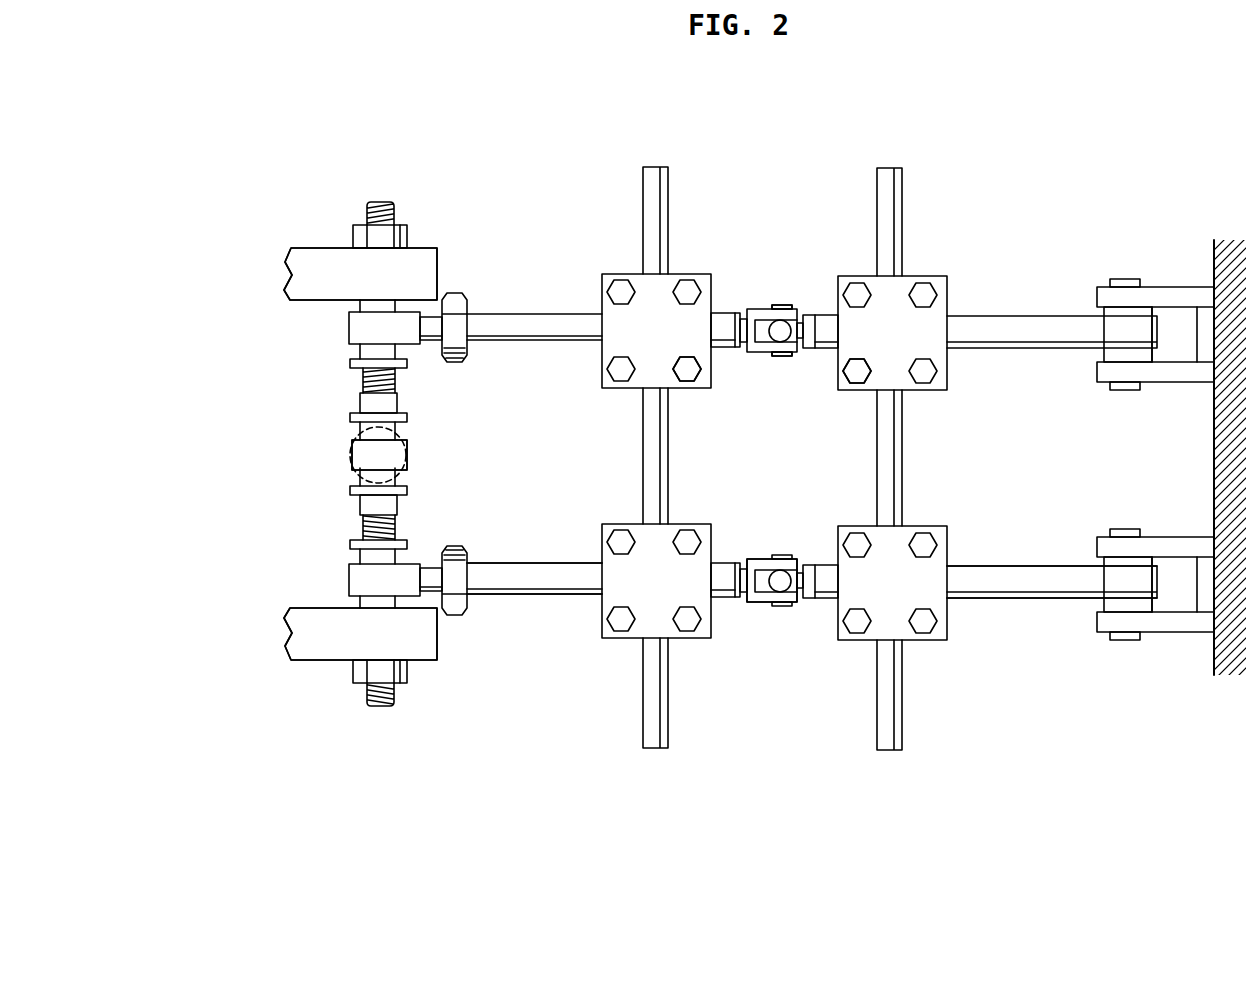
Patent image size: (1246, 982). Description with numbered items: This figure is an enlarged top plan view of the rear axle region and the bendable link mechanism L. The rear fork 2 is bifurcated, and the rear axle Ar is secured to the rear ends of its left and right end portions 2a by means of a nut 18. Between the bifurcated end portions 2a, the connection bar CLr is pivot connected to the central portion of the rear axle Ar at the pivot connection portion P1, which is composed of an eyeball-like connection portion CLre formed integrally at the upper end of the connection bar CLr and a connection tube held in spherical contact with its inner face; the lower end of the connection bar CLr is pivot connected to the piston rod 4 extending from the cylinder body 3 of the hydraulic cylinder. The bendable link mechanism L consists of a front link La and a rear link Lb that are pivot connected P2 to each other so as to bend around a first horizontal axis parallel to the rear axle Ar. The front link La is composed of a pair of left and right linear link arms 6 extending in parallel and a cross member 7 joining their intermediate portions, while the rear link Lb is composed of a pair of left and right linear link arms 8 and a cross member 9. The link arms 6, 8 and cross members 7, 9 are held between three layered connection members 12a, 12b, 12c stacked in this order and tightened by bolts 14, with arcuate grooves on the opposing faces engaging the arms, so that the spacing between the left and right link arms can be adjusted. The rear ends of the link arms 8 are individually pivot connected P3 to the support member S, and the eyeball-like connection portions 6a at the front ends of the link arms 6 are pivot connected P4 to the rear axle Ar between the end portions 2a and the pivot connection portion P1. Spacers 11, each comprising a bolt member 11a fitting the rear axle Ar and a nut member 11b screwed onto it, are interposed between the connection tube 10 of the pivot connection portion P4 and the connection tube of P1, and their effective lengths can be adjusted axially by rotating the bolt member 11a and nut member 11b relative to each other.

The rear fork 2 is at (322, 242).
The rear axle Ar is at (358, 210).
The left and right end portions 2a is at (418, 252).
The connection tube 10 is at (383, 303).
The nut 18 is at (353, 673).
The link arms 6 is at (525, 322).
The eyeball-like connection portions 6a is at (350, 322).
The pivot connection portion P4 is at (350, 330).
The spacers 11 is at (299, 446).
The bolt member 11a is at (362, 380).
The nut member 11b is at (360, 404).
The pivot connection portion P1 is at (388, 442).
The eyeball-like connection portion CLre is at (405, 442).
The connection bar CLr is at (350, 472).
The cylinder body 3 is at (370, 459).
The connection member 12a is at (605, 303).
The connection member 12b is at (935, 310).
The connection member 12c is at (610, 632).
The bolts 14 is at (686, 373).
The cross member 7 is at (645, 418).
The cross member 9 is at (890, 492).
The piston rod 4 is at (733, 392).
The pivot connection P2 is at (780, 305).
The link arms 8 is at (1013, 320).
The pivot connection P3 is at (1125, 279).
The support member S is at (1214, 445).
The front link La is at (528, 600).
The rear link Lb is at (1021, 608).
The bendable link mechanism L is at (790, 652).